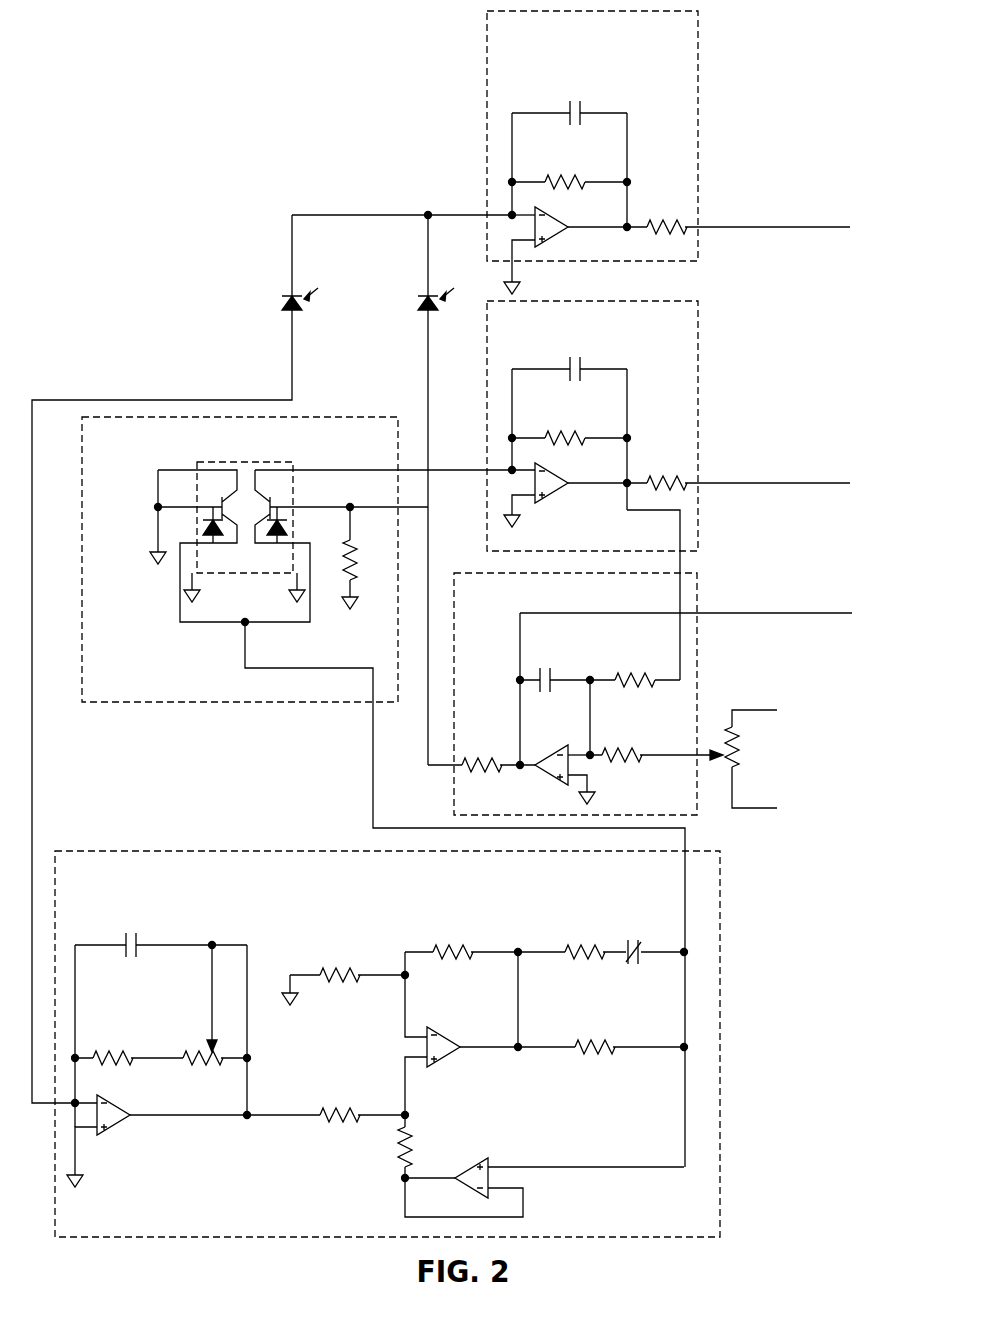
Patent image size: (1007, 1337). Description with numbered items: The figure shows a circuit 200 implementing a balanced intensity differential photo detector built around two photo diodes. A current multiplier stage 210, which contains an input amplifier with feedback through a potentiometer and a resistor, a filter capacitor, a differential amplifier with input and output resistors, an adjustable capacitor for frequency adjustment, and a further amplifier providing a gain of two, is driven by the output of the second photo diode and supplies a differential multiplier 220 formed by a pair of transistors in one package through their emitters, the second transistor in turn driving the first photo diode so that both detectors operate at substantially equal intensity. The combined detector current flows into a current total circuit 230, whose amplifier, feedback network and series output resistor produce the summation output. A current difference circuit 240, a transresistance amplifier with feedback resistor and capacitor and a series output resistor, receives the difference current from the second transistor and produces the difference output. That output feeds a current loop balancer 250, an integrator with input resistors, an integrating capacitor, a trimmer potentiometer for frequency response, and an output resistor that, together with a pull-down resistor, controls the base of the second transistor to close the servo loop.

The circuit 200 is at (288, 112).
The current multiplier stage 210 is at (721, 938).
The differential multiplier 220 is at (325, 417).
The current total circuit 230 is at (699, 113).
The current difference circuit 240 is at (699, 345).
The current loop balancer 250 is at (698, 660).